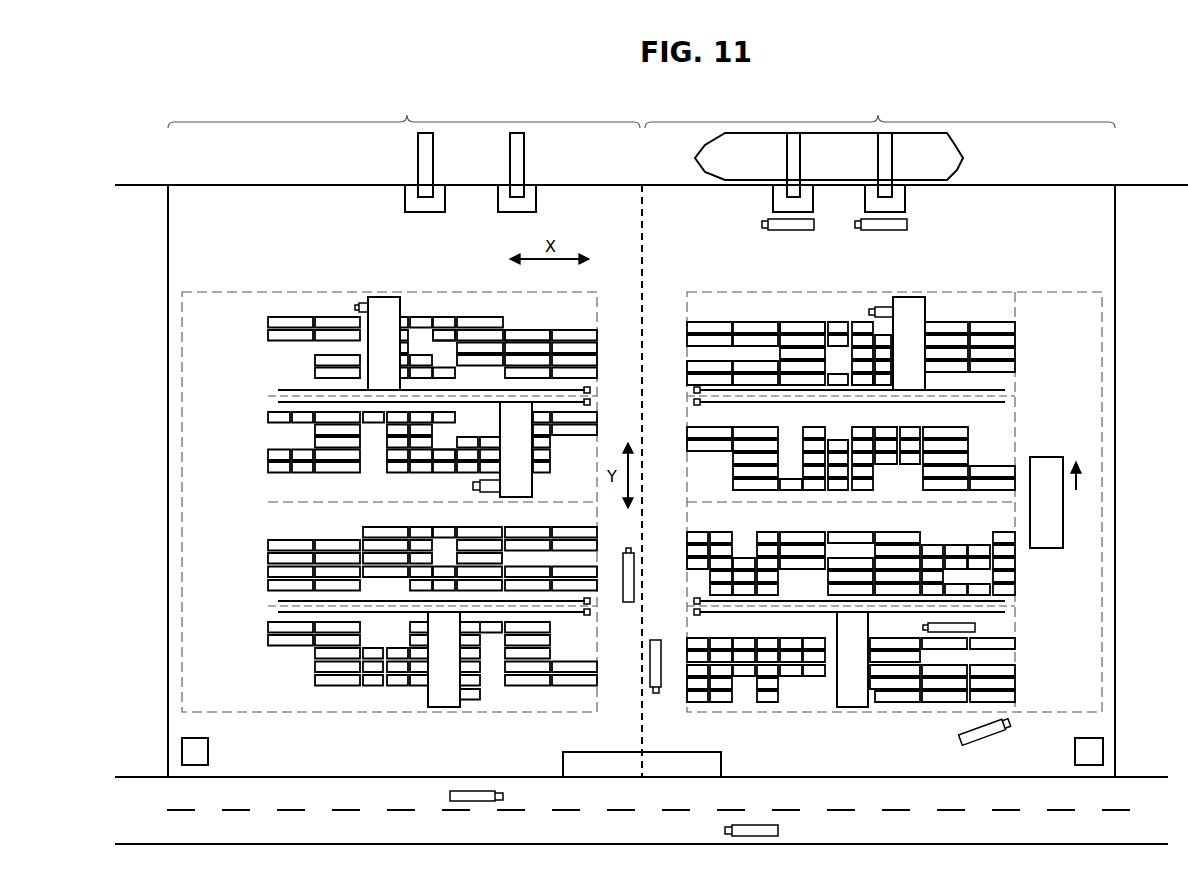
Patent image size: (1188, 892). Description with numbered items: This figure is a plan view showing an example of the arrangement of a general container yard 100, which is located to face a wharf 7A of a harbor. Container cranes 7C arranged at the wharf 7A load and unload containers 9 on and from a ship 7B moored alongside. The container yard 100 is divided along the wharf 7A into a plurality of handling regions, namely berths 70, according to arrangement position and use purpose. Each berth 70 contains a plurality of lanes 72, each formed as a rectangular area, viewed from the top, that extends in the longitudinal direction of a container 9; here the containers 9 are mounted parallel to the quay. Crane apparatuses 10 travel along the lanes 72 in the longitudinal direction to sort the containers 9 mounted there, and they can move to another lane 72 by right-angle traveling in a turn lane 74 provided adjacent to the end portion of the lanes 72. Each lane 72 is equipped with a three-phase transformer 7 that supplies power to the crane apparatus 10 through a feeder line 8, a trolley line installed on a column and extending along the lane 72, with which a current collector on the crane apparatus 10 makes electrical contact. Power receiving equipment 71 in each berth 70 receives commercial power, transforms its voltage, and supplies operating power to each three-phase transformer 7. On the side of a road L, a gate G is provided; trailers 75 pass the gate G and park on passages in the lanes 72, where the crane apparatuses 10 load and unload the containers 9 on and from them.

The container yard 100 is at (1187, 110).
The berth 70 is at (641, 104).
The wharf 7A is at (1010, 187).
The ship 7B is at (970, 158).
The container crane 7C is at (927, 208).
The turn lane 74 is at (1060, 290).
The lane 72 is at (1041, 653).
The container 9 is at (803, 321).
The feeder line 8 is at (838, 405).
The three-phase transformer 7 is at (670, 410).
The crane apparatus 10 is at (1087, 528).
The trailer 75 is at (877, 300).
The power receiving equipment 71 is at (1073, 751).
The gate G is at (722, 758).
The road L is at (1130, 787).